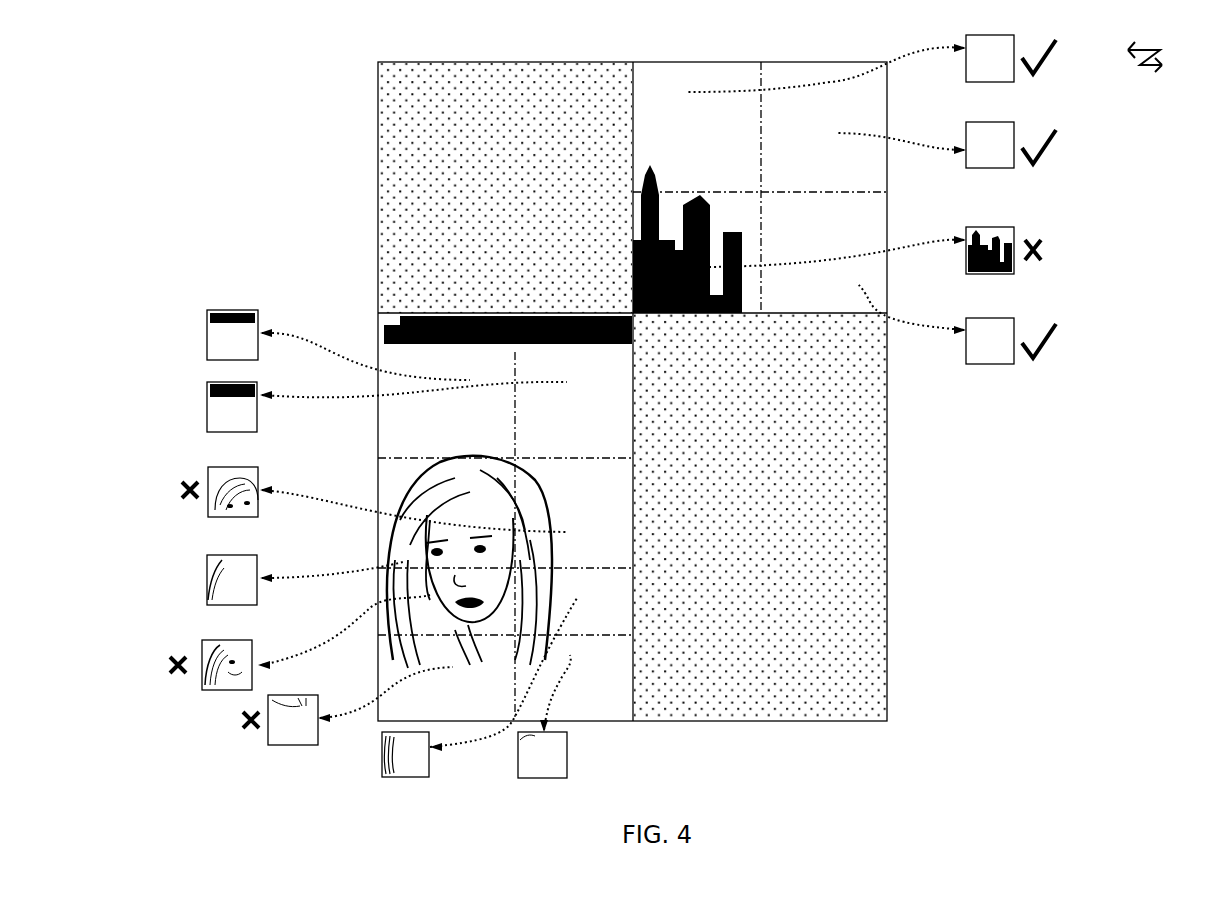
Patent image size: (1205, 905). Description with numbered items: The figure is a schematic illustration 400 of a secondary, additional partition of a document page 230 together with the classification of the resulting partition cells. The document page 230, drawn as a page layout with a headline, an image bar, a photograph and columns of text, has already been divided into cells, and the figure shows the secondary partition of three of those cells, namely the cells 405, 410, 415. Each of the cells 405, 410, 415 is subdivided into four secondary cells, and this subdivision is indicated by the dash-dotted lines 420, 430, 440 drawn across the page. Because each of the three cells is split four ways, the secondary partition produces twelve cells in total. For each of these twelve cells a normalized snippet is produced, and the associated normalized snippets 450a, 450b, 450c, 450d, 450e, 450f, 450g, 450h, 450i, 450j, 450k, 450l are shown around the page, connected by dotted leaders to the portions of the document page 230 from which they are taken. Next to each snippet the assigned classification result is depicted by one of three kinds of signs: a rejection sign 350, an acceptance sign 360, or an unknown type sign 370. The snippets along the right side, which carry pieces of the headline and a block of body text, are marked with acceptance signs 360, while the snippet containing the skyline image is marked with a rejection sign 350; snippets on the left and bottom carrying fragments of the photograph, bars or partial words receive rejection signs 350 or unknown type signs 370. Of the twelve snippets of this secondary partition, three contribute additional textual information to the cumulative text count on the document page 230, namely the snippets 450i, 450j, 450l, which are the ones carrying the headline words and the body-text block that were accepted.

The document page 230 is at (372, 115).
The schematic illustration 400 is at (1145, 39).
The cell 405 is at (705, 85).
The dash-dotted line 420 is at (763, 82).
The dash-dotted line 430 is at (517, 355).
The dash-dotted line 440 is at (480, 527).
The cell 410 is at (405, 500).
The cell 415 is at (580, 700).
The normalized snippet 450a is at (205, 318).
The normalized snippet 450b is at (205, 426).
The normalized snippet 450c is at (205, 515).
The normalized snippet 450d is at (205, 600).
The normalized snippet 450e is at (200, 685).
The normalized snippet 450f is at (378, 765).
The normalized snippet 450g is at (268, 740).
The normalized snippet 450h is at (510, 775).
The normalized snippet 450i is at (1022, 82).
The normalized snippet 450j is at (1022, 170).
The normalized snippet 450k is at (1020, 272).
The normalized snippet 450l is at (1022, 365).
The rejection sign 350 is at (180, 492).
The acceptance sign 360 is at (1062, 340).
The unknown type sign 370 is at (185, 578).